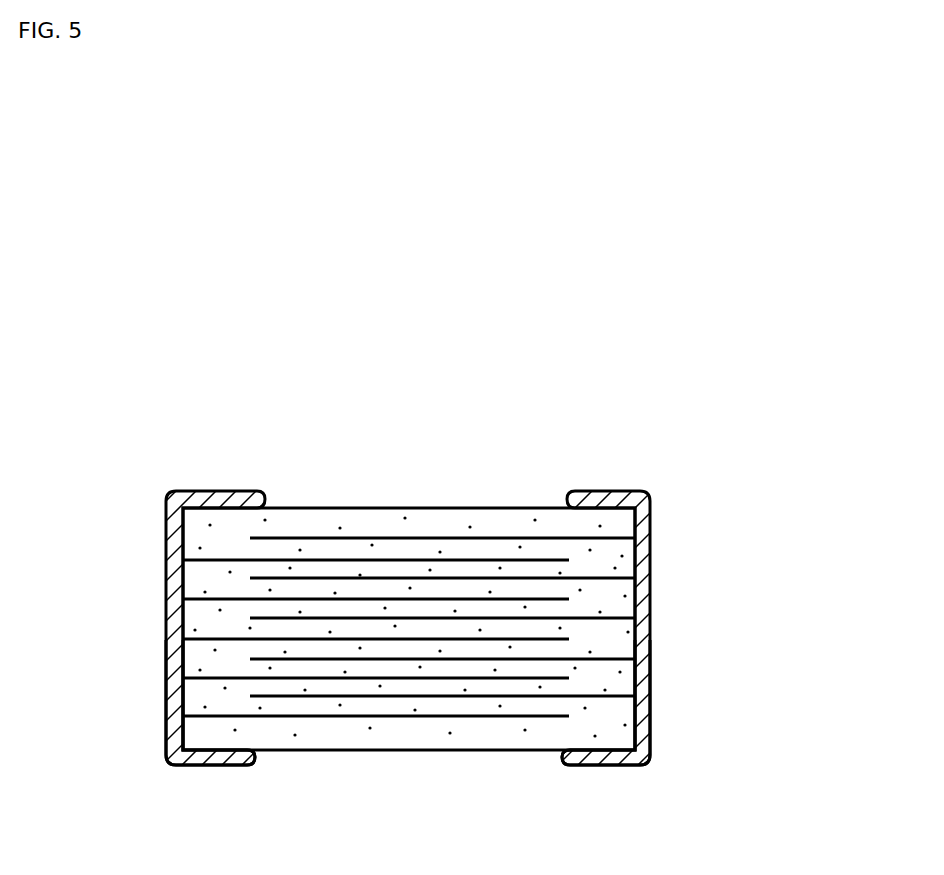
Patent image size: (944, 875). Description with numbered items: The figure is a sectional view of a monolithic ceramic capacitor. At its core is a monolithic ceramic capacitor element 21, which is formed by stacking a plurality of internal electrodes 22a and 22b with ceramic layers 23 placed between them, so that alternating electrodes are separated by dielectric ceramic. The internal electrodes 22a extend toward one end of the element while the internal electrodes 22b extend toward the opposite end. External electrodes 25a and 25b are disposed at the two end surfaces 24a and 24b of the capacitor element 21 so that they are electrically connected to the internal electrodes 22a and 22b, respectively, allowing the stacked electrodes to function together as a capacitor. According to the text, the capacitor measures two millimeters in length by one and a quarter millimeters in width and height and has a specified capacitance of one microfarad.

The monolithic ceramic capacitor element 21 is at (426, 496).
The internal electrode 22a is at (337, 600).
The internal electrode 22b is at (277, 618).
The ceramic layer 23 is at (540, 568).
The end surface 24a is at (165, 571).
The end surface 24b is at (650, 552).
The external electrode 25a is at (165, 663).
The external electrode 25b is at (650, 627).